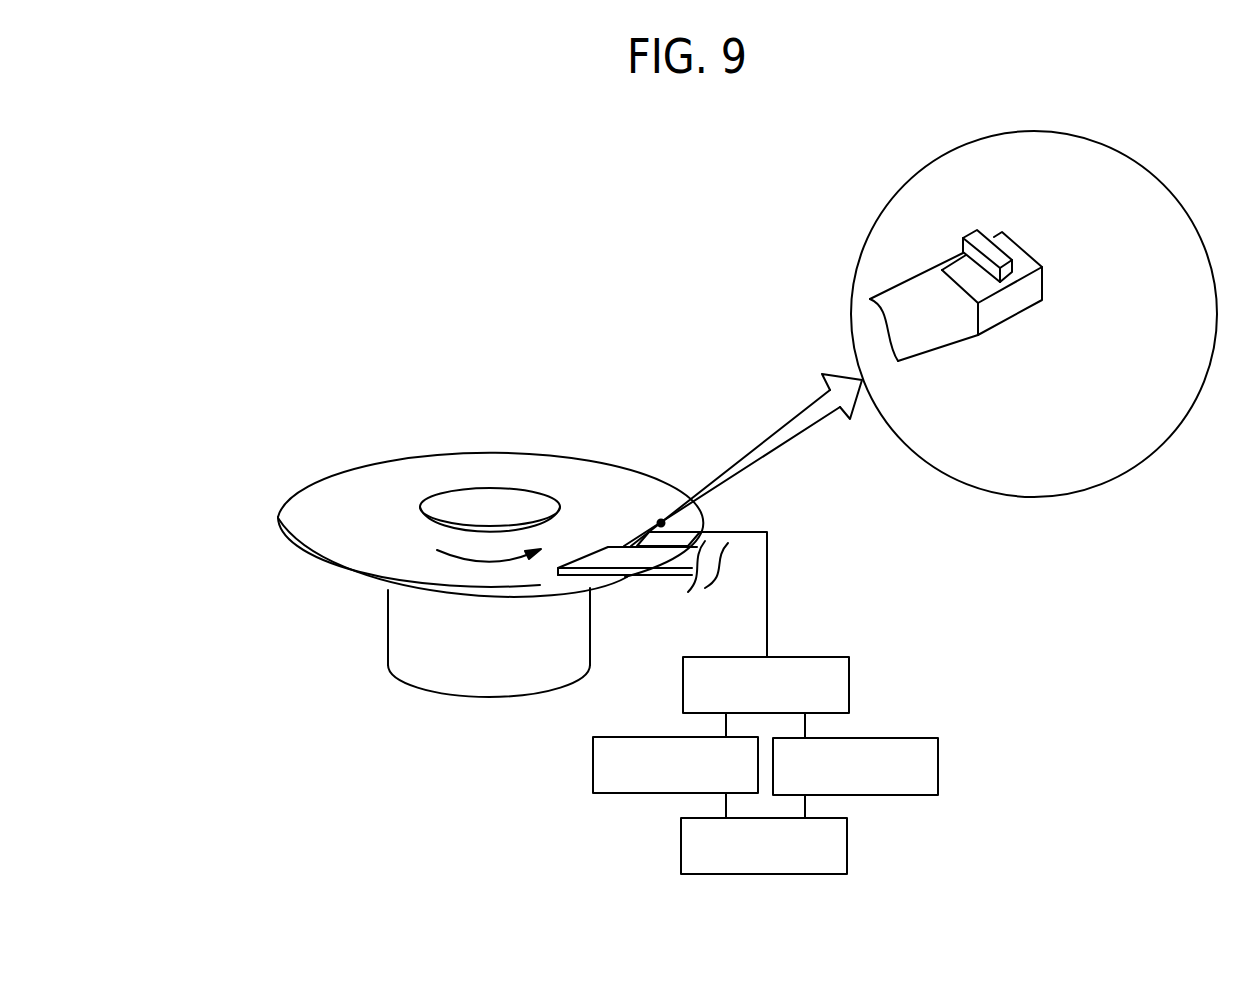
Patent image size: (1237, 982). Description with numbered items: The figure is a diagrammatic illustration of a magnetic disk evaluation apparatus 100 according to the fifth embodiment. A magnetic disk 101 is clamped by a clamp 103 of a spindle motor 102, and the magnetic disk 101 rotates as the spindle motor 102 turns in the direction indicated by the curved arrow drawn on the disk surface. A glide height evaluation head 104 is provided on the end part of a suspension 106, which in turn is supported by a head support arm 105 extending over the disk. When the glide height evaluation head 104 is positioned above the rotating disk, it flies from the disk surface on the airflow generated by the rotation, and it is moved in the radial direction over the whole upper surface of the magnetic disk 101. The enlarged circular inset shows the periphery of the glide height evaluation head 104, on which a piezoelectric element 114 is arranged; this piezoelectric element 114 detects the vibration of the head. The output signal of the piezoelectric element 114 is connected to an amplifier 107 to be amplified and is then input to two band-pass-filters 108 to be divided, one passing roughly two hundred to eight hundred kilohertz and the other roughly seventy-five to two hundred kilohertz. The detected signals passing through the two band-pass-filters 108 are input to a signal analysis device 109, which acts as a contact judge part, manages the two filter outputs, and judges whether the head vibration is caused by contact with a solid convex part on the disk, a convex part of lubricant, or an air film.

The magnetic disk evaluation apparatus 100 is at (716, 187).
The magnetic disk 101 is at (323, 492).
The spindle motor 102 is at (577, 647).
The clamp 103 is at (502, 498).
The glide height evaluation head 104 is at (685, 512).
The head support arm 105 is at (682, 560).
The suspension 106 is at (637, 533).
The amplifier 107 is at (830, 690).
The band-pass-filters 108 is at (615, 757).
The signal analysis device 109 is at (830, 855).
The piezoelectric element 114 is at (983, 248).